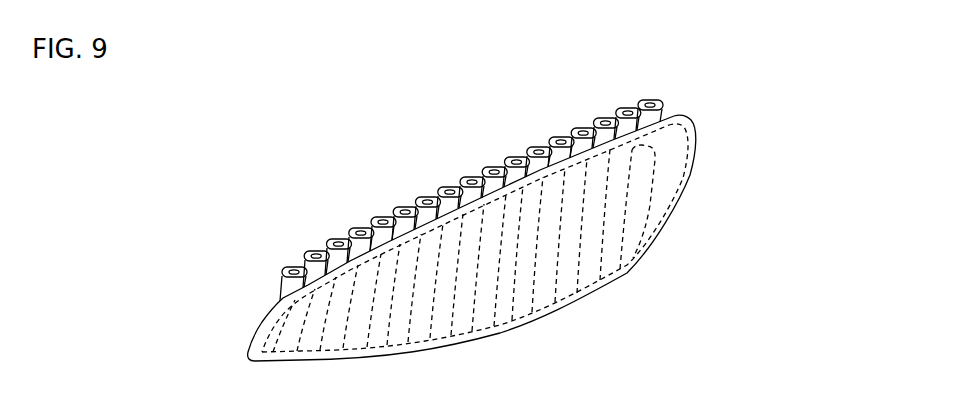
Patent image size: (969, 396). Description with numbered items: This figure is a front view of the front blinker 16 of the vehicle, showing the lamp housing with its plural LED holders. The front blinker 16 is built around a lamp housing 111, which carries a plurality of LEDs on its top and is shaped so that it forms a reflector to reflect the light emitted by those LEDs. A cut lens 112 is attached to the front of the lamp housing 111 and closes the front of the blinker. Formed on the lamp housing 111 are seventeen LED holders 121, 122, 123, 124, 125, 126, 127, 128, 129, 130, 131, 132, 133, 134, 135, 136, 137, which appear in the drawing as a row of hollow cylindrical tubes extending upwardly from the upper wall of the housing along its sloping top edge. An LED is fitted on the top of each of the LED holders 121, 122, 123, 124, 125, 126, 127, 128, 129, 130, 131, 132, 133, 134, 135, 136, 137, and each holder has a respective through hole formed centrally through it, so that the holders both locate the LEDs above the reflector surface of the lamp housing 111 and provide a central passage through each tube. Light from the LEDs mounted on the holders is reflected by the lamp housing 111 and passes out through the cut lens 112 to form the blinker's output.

The front blinker 16 is at (284, 129).
The lamp housing 111 is at (271, 290).
The cut lens 112 is at (693, 168).
The LED holder 121 is at (281, 267).
The LED holder 122 is at (305, 255).
The LED holder 123 is at (328, 240).
The LED holder 124 is at (350, 231).
The LED holder 125 is at (372, 219).
The LED holder 126 is at (394, 210).
The LED holder 127 is at (417, 199).
The LED holder 128 is at (436, 193).
The LED holder 129 is at (462, 181).
The LED holder 130 is at (484, 171).
The LED holder 131 is at (506, 161).
The LED holder 132 is at (529, 151).
The LED holder 133 is at (552, 141).
The LED holder 134 is at (574, 132).
The LED holder 135 is at (597, 122).
The LED holder 136 is at (620, 112).
The LED holder 137 is at (643, 104).